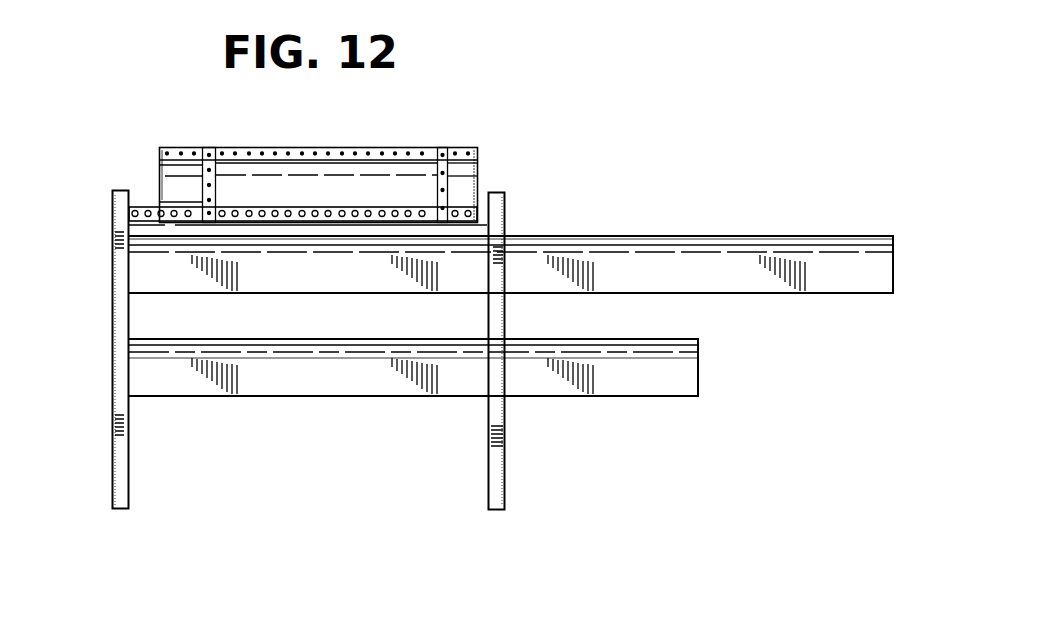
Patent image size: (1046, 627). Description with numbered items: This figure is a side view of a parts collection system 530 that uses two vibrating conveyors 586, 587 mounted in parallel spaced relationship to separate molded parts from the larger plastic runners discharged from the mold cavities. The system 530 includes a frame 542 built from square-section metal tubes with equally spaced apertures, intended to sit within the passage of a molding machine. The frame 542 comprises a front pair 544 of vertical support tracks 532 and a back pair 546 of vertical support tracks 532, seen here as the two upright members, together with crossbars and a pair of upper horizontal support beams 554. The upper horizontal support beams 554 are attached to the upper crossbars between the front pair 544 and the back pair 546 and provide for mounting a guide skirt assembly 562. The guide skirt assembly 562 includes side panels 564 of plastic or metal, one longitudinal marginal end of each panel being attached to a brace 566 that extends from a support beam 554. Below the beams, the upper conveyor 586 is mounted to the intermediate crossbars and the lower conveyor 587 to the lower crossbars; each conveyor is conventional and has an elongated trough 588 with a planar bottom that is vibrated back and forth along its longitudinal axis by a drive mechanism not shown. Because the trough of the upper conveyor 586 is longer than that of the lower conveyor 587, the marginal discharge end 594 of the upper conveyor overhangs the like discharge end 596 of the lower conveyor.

The parts collection system 530 is at (718, 154).
The vertical support tracks 532 is at (131, 482).
The frame 542 is at (100, 200).
The front pair of vertical support tracks 544 is at (546, 478).
The back pair of vertical support tracks 546 is at (108, 352).
The upper horizontal support beams 554 is at (334, 223).
The guide skirt assembly 562 is at (354, 156).
The side panels 564 is at (326, 183).
The brace 566 is at (443, 148).
The upper vibrating conveyor 586 is at (524, 276).
The lower vibrating conveyor 587 is at (455, 385).
The elongated trough 588 is at (639, 245).
The marginal discharge end 594 is at (894, 272).
The discharge end 596 is at (700, 373).